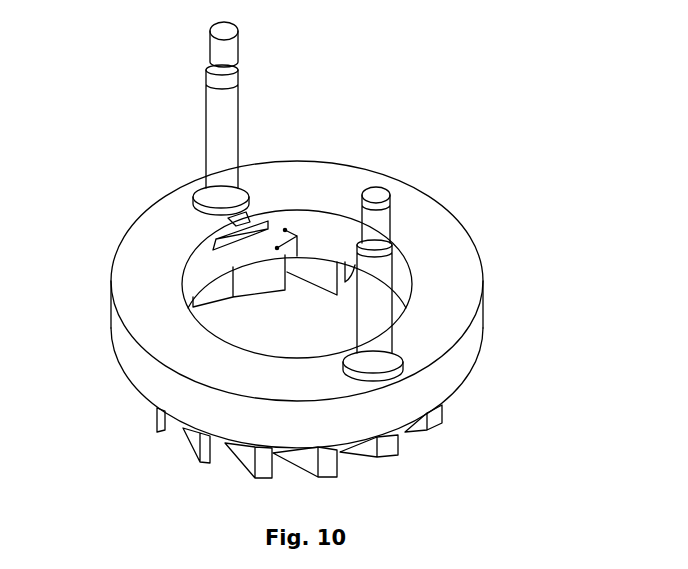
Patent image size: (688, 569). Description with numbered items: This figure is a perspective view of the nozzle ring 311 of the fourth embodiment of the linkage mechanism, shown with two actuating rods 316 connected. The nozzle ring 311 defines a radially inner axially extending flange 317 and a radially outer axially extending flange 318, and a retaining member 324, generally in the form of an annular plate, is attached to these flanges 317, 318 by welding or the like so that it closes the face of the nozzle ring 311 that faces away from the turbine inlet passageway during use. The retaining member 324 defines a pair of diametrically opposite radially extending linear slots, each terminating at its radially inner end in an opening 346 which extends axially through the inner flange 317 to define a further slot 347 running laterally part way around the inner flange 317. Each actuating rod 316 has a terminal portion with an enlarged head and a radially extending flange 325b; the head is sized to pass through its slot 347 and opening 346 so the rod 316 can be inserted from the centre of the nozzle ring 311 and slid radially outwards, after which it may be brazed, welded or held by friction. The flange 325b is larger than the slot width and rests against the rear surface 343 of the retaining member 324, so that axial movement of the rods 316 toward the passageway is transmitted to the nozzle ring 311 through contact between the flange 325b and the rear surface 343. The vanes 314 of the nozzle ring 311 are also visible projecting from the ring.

The nozzle ring 311 is at (483, 281).
The vanes 314 is at (400, 455).
The actuating rod 316 is at (206, 108).
The radially inner axially extending flange 317 is at (323, 222).
The radially outer axially extending flange 318 is at (160, 380).
The retaining member 324 is at (442, 232).
The radially extending flange 325b is at (400, 362).
The rear surface 343 is at (150, 327).
The opening 346 is at (266, 222).
The further slot 347 is at (283, 229).